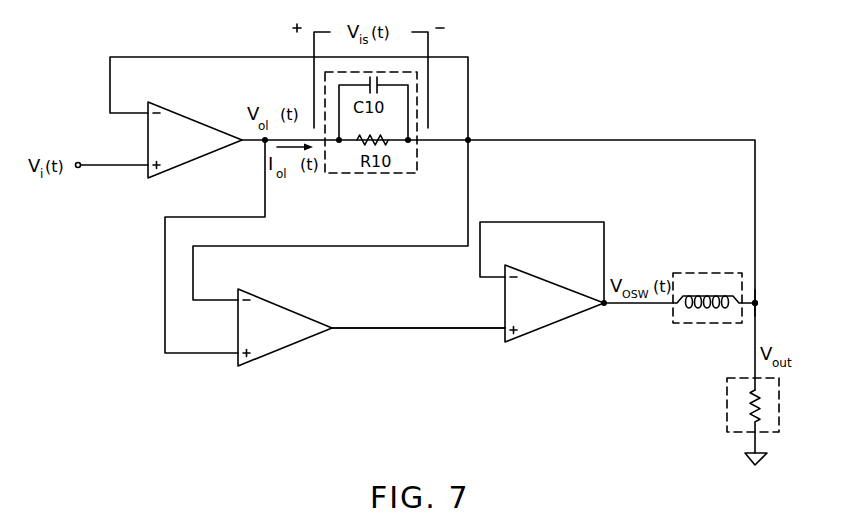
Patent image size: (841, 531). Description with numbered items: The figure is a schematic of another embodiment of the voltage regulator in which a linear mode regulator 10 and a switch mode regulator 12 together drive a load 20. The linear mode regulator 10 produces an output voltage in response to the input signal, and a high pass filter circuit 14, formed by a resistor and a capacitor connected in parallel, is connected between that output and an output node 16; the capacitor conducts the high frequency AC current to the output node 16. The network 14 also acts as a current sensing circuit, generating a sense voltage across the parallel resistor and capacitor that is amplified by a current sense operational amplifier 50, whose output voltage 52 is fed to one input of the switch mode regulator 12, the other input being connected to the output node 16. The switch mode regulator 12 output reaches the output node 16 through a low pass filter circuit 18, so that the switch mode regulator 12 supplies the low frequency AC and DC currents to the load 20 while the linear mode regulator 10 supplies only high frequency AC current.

The linear mode regulator 10 is at (197, 158).
The switch mode regulator 12 is at (555, 322).
The high pass filter circuit 14 is at (370, 175).
The output node 16 is at (758, 302).
The low pass filter circuit 18 is at (690, 325).
The load 20 is at (727, 410).
The current sense operational amplifier 50 is at (280, 349).
The output voltage 52 is at (403, 327).